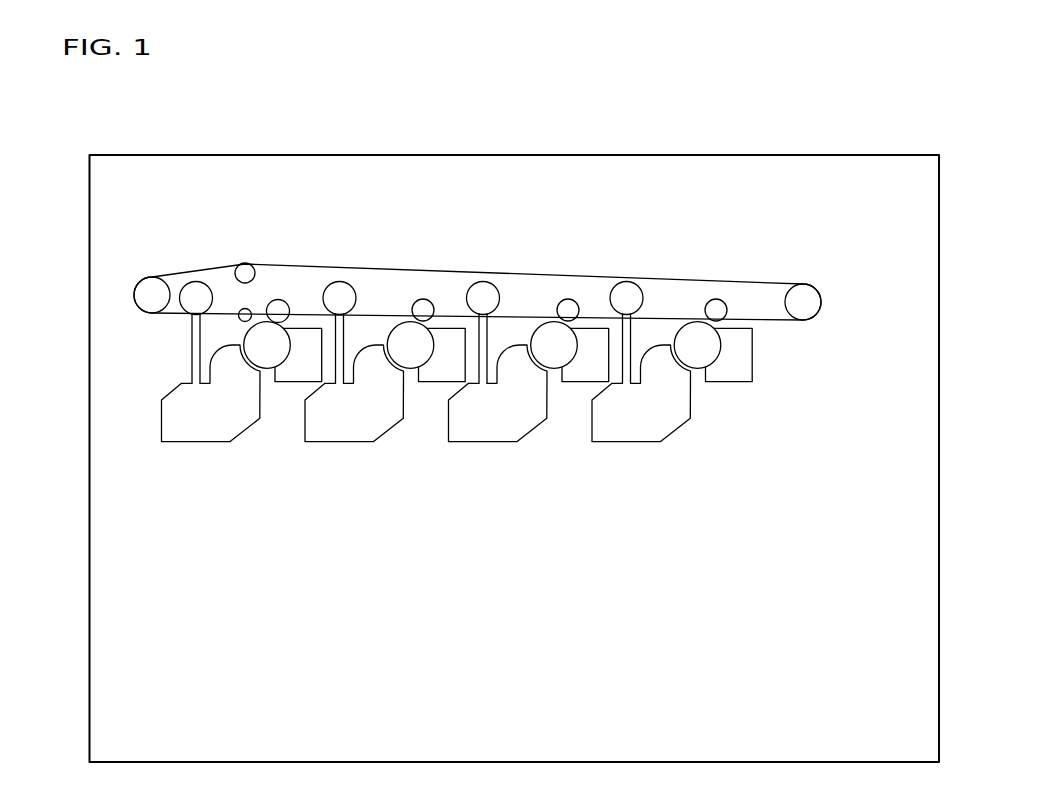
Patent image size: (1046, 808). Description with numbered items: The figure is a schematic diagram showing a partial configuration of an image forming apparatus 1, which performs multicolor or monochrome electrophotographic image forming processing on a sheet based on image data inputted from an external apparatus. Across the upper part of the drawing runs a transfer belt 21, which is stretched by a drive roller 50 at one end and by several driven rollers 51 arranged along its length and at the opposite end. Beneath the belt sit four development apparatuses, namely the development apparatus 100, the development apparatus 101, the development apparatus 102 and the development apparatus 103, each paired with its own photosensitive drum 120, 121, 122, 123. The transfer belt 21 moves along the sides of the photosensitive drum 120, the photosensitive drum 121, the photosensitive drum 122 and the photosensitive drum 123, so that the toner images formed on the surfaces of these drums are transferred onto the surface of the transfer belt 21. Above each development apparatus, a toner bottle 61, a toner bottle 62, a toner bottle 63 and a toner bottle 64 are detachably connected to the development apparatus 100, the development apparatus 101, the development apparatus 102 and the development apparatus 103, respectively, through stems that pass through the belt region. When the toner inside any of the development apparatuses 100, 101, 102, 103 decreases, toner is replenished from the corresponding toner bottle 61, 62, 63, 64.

The image forming apparatus 1 is at (266, 138).
The transfer belt 21 is at (697, 278).
The drive roller 50 is at (137, 283).
The driven rollers 51 is at (245, 264).
The toner bottle 61 is at (195, 282).
The toner bottle 62 is at (334, 282).
The toner bottle 63 is at (476, 282).
The toner bottle 64 is at (618, 282).
The development apparatus 100 is at (223, 443).
The development apparatus 101 is at (366, 443).
The development apparatus 102 is at (508, 443).
The development apparatus 103 is at (651, 443).
The photosensitive drum 120 is at (265, 368).
The photosensitive drum 121 is at (408, 368).
The photosensitive drum 122 is at (552, 368).
The photosensitive drum 123 is at (696, 368).